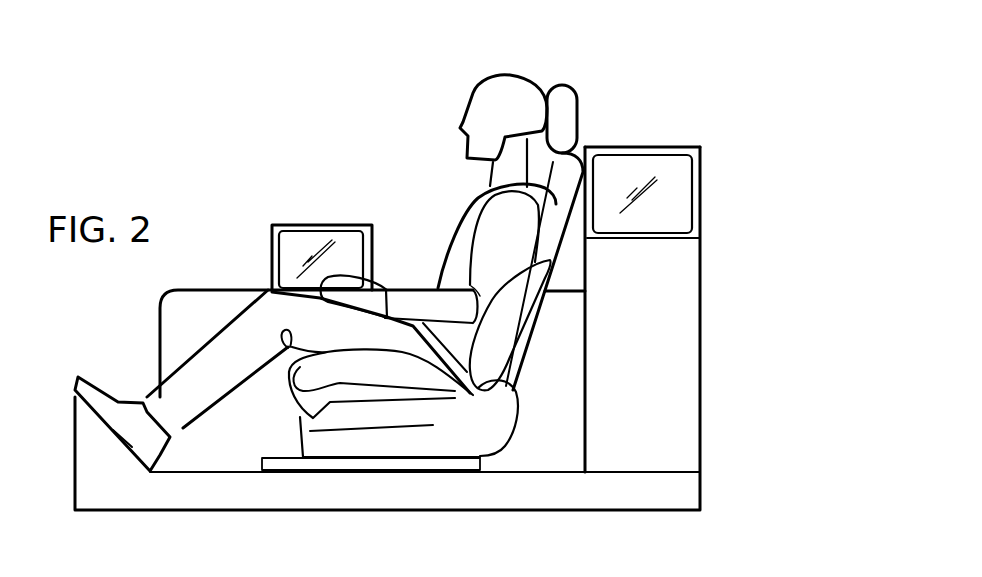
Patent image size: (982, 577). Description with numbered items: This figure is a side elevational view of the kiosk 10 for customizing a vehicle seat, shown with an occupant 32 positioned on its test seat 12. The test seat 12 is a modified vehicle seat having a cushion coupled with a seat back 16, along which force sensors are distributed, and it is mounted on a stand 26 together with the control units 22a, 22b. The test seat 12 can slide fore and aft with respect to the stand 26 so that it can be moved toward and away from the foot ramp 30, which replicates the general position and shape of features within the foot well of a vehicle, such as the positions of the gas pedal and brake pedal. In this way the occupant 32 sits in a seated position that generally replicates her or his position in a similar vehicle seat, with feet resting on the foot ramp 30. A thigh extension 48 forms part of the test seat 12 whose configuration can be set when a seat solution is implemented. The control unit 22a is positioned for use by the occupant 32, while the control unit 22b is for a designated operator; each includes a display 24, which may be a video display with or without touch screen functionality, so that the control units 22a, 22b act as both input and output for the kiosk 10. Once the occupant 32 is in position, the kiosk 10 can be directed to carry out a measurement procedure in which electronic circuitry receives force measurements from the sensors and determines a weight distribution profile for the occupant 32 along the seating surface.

The kiosk 10 is at (688, 55).
The test seat 12 is at (550, 388).
The seat back 16 is at (517, 305).
The control unit 22a is at (307, 216).
The control unit 22b is at (641, 144).
The display 24 is at (680, 186).
The stand 26 is at (625, 490).
The foot ramp 30 is at (97, 423).
The occupant 32 is at (474, 84).
The thigh extension 48 is at (290, 467).